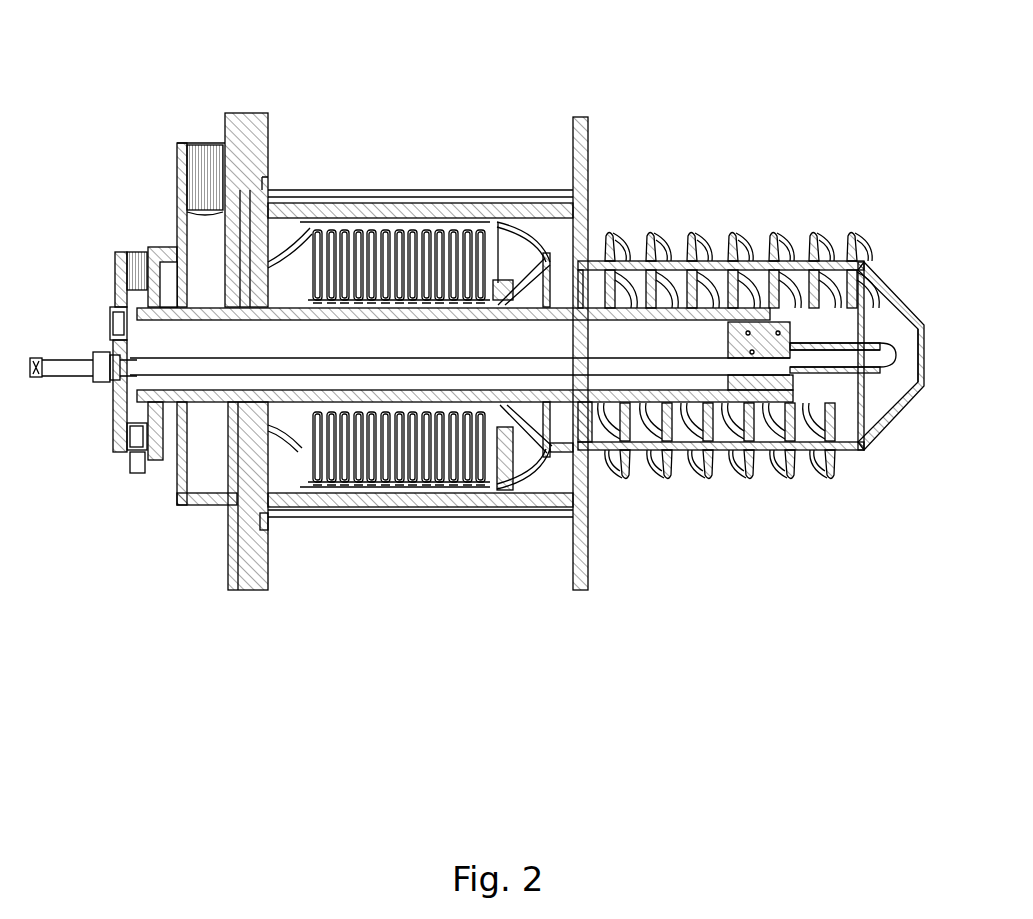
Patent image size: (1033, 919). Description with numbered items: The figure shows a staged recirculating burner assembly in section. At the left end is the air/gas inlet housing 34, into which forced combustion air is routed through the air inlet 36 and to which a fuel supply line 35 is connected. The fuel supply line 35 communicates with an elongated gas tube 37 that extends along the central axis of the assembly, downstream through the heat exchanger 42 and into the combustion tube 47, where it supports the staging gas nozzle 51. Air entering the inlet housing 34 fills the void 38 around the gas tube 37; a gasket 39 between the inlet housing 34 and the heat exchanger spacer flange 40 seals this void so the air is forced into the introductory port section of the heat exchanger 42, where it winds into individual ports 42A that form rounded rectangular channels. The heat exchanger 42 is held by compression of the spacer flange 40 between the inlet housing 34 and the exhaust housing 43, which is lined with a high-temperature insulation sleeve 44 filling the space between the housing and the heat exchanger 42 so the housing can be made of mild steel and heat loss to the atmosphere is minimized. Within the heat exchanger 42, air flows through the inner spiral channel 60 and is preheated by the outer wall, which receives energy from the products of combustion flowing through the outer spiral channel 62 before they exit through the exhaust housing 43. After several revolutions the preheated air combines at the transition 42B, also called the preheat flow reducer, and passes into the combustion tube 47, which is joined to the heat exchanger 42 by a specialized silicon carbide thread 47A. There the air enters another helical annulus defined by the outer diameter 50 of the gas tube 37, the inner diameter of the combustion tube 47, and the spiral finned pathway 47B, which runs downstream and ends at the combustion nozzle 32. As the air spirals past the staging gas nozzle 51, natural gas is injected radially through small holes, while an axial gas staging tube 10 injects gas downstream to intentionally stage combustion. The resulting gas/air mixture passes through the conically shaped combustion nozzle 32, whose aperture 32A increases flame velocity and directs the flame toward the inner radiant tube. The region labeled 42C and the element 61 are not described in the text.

The gas staging tube 10 is at (901, 377).
The combustion nozzle 32 is at (898, 422).
The aperture 32A is at (930, 355).
The inlet housing 34 is at (175, 461).
The fuel supply line 35 is at (137, 246).
The air inlet 36 is at (199, 136).
The gas tube 37 is at (200, 470).
The void 38 is at (216, 450).
The gasket 39 is at (240, 108).
The spacer flange 40 is at (246, 568).
The heat exchanger 42 is at (264, 522).
The individual ports 42A is at (296, 420).
The transition 42B is at (530, 268).
The connector 42C is at (558, 410).
The exhaust housing 43 is at (340, 188).
The insulation sleeve 44 is at (373, 203).
The combustion tube 47 is at (676, 252).
The silicon carbide thread 47A is at (588, 258).
The spiral finned pathway 47B is at (662, 430).
The outer diameter of the gas tube 50 is at (721, 504).
The gas nozzle 51 is at (786, 328).
The inner spiral channel 60 is at (399, 417).
The coil winding 61 is at (369, 452).
The outer spiral channel 62 is at (406, 490).